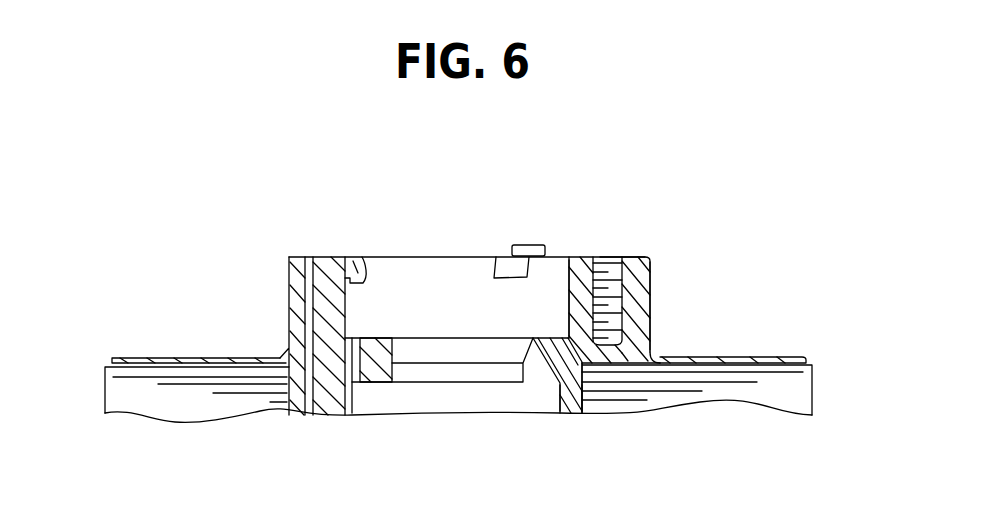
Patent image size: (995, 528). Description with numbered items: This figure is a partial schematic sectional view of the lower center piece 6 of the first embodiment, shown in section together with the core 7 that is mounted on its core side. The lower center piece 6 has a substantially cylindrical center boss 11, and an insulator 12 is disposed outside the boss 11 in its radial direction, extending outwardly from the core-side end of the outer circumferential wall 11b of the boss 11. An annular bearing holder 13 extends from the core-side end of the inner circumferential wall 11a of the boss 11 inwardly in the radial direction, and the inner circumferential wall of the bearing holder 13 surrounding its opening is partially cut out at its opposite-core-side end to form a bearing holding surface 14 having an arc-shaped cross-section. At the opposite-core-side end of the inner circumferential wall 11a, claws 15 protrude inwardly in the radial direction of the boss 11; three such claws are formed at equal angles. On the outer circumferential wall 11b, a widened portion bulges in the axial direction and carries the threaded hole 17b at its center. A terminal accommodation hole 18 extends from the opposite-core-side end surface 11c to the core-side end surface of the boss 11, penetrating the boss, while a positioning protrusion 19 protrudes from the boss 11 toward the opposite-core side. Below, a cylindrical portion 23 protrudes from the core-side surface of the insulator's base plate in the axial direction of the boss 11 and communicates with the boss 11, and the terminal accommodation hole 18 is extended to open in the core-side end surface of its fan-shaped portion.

The lower center piece 6 is at (277, 239).
The core 7 is at (803, 397).
The center boss 11 is at (642, 272).
The inner circumferential wall 11a is at (562, 265).
The outer circumferential wall 11b is at (652, 303).
The opposite-core-side end surface 11c is at (632, 257).
The insulator 12 is at (765, 357).
The bearing holder 13 is at (543, 337).
The bearing holding surface 14 is at (388, 345).
The claw 15 is at (364, 257).
The threaded hole 17b is at (608, 261).
The terminal accommodation hole 18 is at (307, 257).
The positioning protrusion 19 is at (522, 245).
The cylindrical portion 23 is at (568, 392).